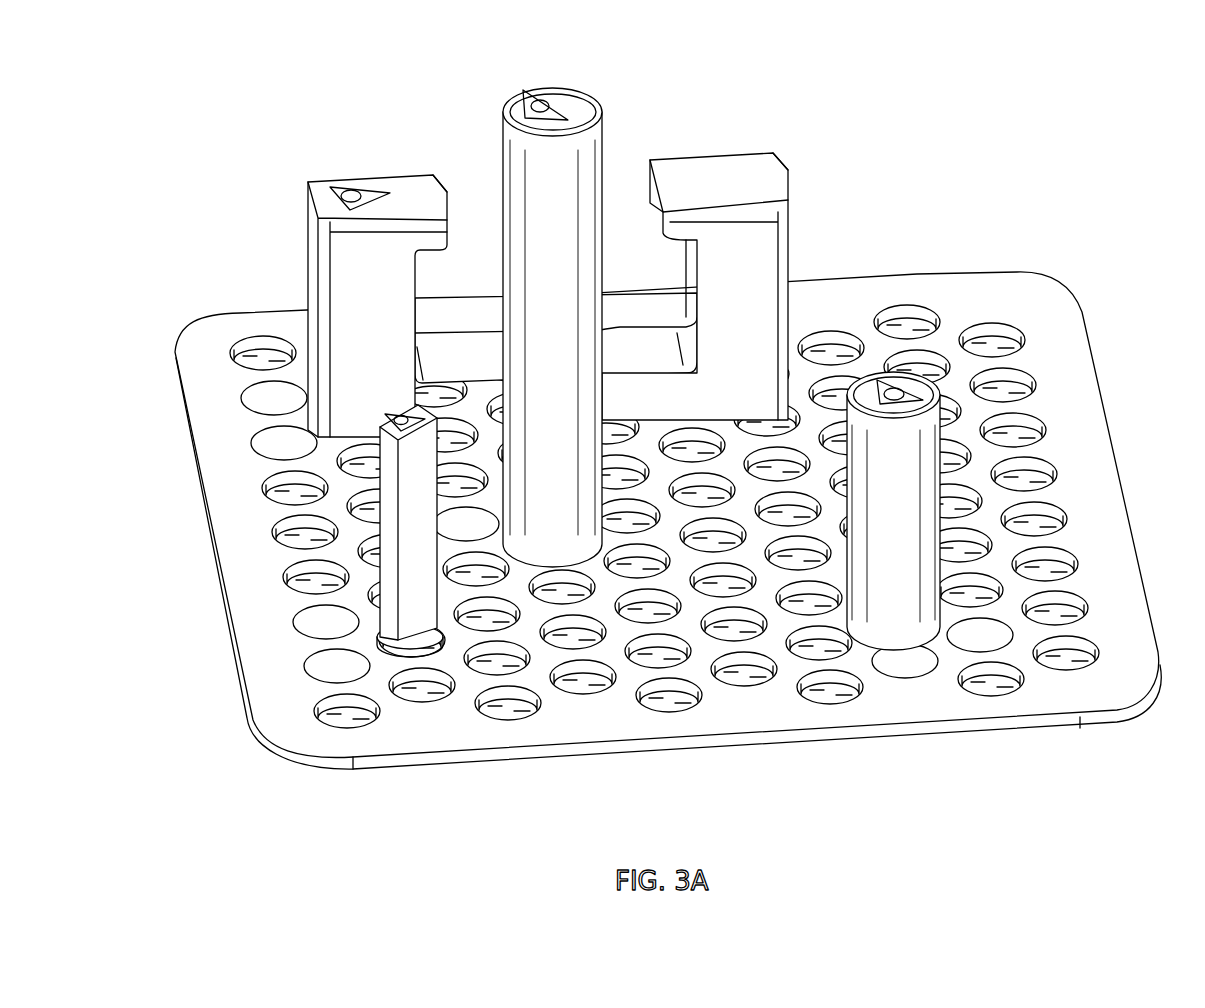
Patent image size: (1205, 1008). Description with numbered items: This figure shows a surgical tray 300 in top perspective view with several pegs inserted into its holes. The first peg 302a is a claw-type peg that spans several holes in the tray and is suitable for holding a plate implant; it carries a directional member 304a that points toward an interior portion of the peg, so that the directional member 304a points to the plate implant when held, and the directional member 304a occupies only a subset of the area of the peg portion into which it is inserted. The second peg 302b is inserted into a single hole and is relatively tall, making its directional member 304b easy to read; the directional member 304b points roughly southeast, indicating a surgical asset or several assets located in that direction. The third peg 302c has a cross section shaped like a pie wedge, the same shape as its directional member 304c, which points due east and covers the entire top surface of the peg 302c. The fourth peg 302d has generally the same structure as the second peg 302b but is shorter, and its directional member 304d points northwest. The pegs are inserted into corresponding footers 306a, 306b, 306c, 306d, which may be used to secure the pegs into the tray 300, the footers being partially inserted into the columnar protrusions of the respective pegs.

The surgical tray 300 is at (653, 422).
The first peg 302a is at (341, 287).
The second peg 302b is at (513, 301).
The third peg 302c is at (293, 506).
The fourth peg 302d is at (1018, 448).
The directional member 304a is at (345, 188).
The directional member 304b is at (540, 92).
The directional member 304c is at (380, 413).
The directional member 304d is at (893, 395).
The footer 306a is at (272, 447).
The footer 306b is at (484, 522).
The footer 306c is at (317, 668).
The footer 306d is at (920, 660).